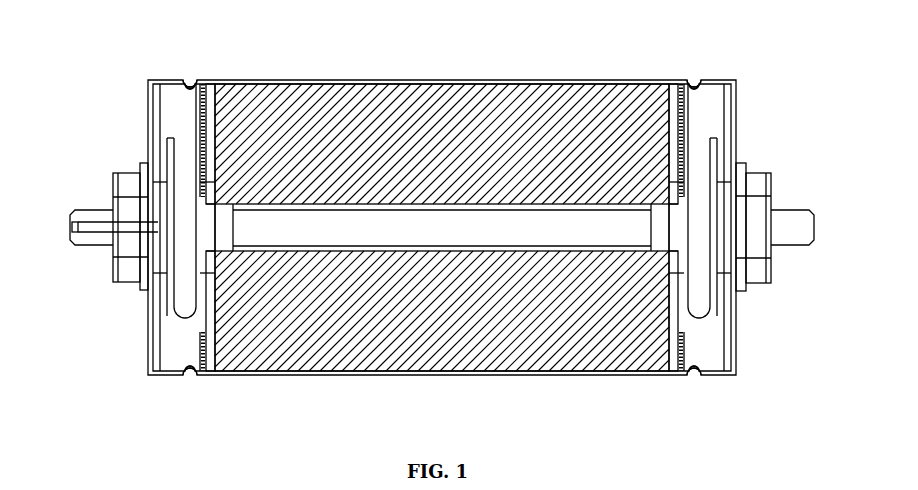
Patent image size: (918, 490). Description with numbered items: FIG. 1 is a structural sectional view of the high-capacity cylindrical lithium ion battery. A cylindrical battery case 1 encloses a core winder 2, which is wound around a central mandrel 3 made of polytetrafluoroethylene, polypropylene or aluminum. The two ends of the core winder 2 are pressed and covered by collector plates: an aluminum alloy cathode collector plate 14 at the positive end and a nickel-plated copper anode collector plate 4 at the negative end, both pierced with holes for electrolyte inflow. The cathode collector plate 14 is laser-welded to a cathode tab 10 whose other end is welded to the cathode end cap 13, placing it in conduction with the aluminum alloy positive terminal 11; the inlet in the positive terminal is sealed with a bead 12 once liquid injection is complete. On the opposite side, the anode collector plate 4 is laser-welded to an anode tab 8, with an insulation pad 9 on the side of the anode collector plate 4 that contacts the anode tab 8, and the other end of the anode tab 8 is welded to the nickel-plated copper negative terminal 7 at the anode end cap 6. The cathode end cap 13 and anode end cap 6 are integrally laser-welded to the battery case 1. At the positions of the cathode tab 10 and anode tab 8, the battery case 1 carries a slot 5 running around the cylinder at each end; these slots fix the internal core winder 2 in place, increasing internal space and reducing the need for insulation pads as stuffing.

The battery case 1 is at (372, 73).
The core winder 2 is at (435, 112).
The mandrel 3 is at (549, 196).
The anode collector plate 4 is at (748, 29).
The slot 5 is at (186, 70).
The anode end cap 6 is at (745, 117).
The negative terminal 7 is at (860, 306).
The anode tab 8 is at (705, 320).
The insulation pad 9 is at (203, 80).
The cathode tab 10 is at (180, 333).
The positive terminal 11 is at (103, 258).
The bead 12 is at (69, 201).
The cathode end cap 13 is at (148, 80).
The cathode collector plate 14 is at (222, 122).